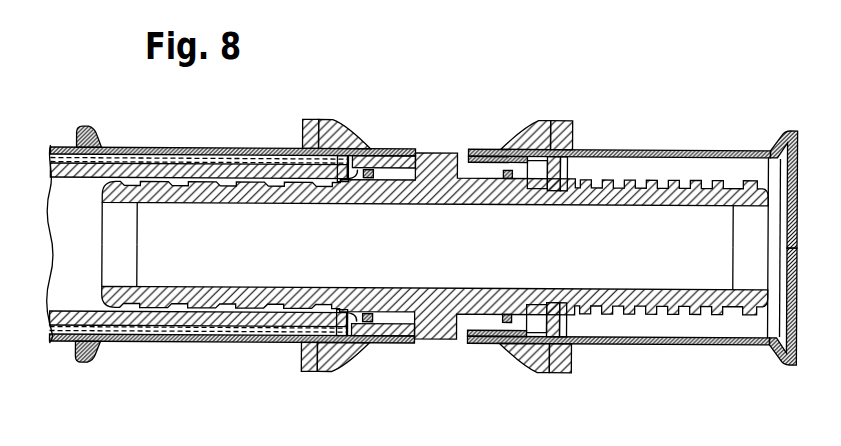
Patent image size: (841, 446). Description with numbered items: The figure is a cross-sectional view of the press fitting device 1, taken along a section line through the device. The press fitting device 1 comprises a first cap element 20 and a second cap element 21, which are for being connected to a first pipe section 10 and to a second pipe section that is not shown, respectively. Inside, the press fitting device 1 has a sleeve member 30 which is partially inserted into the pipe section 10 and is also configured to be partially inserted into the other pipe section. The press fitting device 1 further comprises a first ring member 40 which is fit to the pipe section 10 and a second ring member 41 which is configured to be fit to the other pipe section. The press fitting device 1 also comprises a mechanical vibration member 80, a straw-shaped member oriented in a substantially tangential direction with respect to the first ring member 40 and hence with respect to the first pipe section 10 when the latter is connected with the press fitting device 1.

The press fitting device 1 is at (622, 118).
The first pipe section 10 is at (258, 343).
The first cap element 20 is at (192, 343).
The second cap element 21 is at (667, 343).
The sleeve member 30 is at (702, 188).
The first ring member 40 is at (337, 120).
The second ring member 41 is at (545, 122).
The mechanical vibration member 80 is at (387, 148).